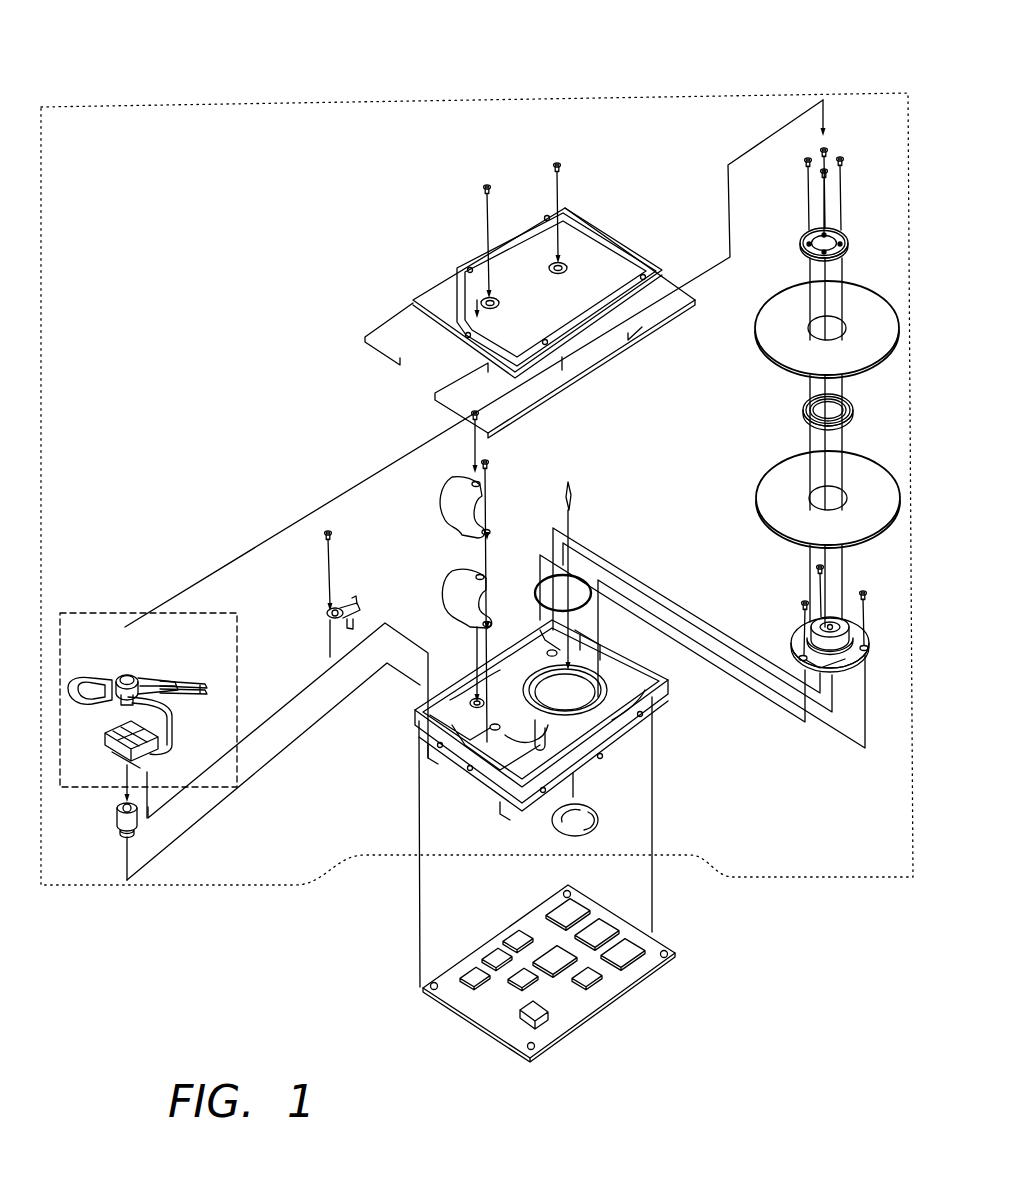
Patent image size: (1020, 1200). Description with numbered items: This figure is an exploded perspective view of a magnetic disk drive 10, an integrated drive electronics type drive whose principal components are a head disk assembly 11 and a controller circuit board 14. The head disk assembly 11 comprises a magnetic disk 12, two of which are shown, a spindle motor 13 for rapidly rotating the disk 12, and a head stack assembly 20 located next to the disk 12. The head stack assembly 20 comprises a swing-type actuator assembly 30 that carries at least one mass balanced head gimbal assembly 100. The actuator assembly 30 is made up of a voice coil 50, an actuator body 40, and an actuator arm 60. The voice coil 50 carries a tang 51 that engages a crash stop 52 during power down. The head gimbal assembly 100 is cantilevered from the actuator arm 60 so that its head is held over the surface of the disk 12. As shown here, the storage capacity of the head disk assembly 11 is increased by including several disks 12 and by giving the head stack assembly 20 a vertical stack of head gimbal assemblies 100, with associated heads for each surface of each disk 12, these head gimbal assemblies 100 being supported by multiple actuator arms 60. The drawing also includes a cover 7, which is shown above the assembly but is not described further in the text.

The magnetic disk drive 10 is at (280, 70).
The cover 7 is at (437, 280).
The head disk assembly 11 is at (757, 878).
The magnetic disk 12 is at (762, 372).
The spindle motor 13 is at (795, 636).
The controller circuit board 14 is at (598, 1003).
The head stack assembly 20 is at (95, 612).
The actuator assembly 30 is at (173, 673).
The actuator body 40 is at (138, 672).
The voice coil 50 is at (102, 705).
The tang 51 is at (68, 686).
The crash stop 52 is at (325, 612).
The actuator arm 60 is at (180, 700).
The head gimbal assembly 100 is at (183, 678).